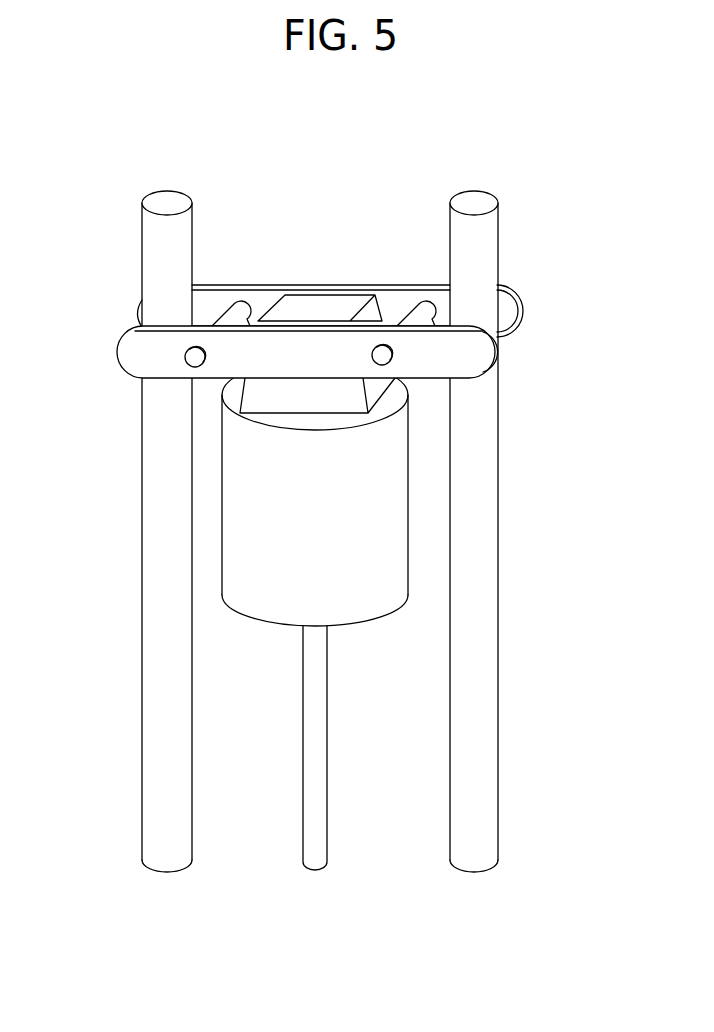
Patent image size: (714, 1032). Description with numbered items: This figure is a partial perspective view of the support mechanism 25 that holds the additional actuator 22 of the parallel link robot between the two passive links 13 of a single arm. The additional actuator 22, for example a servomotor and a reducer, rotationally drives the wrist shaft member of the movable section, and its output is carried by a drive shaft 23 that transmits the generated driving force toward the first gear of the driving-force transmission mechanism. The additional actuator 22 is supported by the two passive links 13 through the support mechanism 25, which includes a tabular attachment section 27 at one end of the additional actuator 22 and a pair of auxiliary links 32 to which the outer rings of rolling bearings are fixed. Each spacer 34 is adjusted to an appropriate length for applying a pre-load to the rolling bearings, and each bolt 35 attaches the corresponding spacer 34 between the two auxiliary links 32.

The passive links 13 is at (158, 688).
The additional actuator 22 is at (393, 553).
The drive shaft 23 is at (320, 728).
The support mechanism 25 is at (322, 268).
The attachment section 27 is at (288, 398).
The auxiliary links 32 is at (522, 298).
The spacer 34 is at (236, 313).
The bolt 35 is at (195, 358).